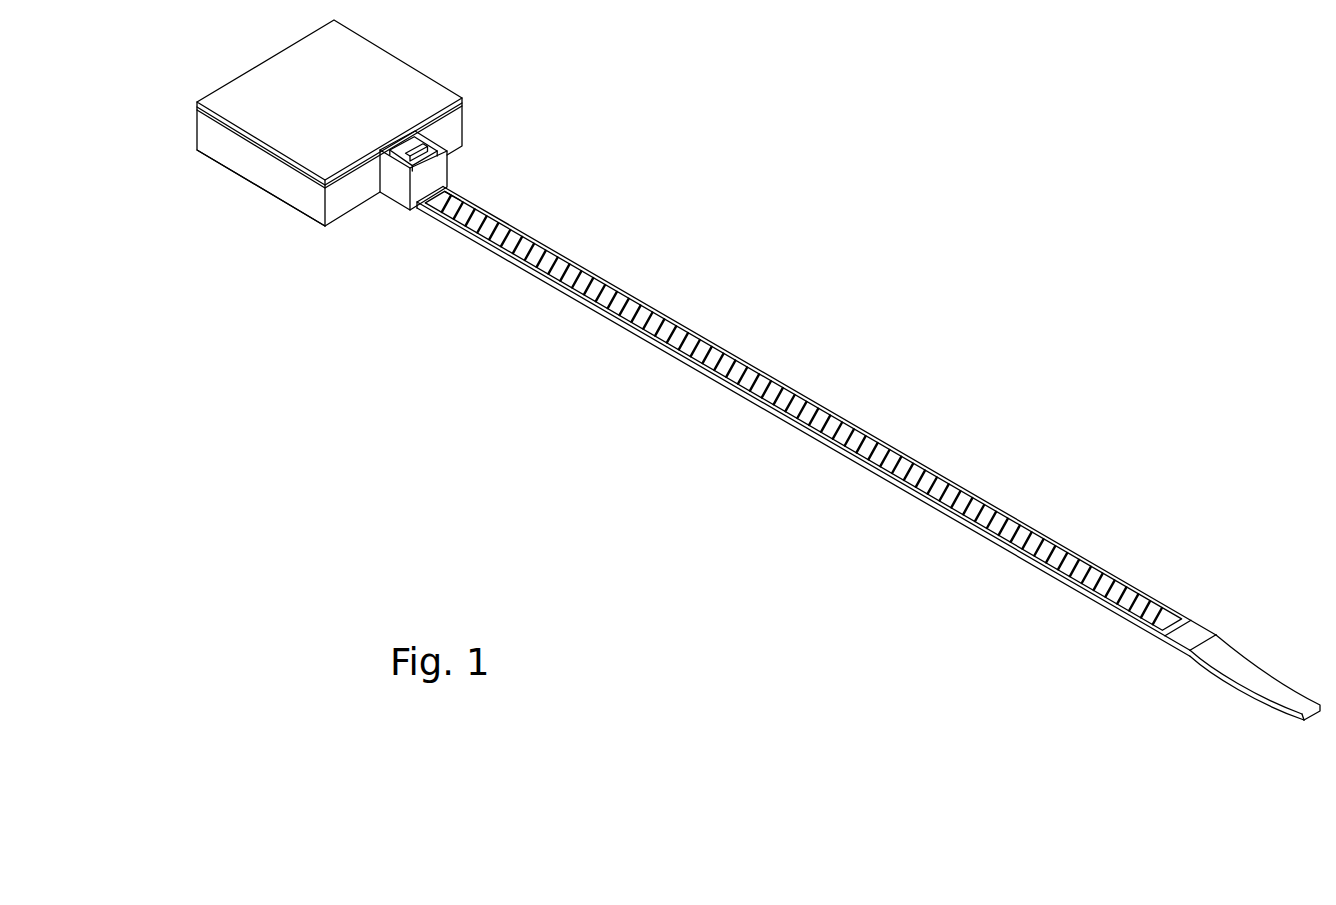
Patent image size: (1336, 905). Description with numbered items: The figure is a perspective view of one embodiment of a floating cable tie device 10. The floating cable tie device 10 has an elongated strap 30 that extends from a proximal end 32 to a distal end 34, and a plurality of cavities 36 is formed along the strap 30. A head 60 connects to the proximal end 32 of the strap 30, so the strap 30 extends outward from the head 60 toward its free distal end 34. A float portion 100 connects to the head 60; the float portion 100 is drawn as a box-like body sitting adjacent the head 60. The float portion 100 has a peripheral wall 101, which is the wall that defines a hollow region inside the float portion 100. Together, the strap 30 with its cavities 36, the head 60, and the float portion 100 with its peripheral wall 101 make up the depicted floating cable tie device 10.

The floating cable tie device 10 is at (823, 72).
The float portion 100 is at (400, 58).
The peripheral wall 101 is at (252, 93).
The head 60 is at (437, 168).
The elongated strap 30 is at (840, 413).
The proximal end 32 is at (442, 220).
The distal end 34 is at (1153, 632).
The cavities 36 is at (1023, 533).